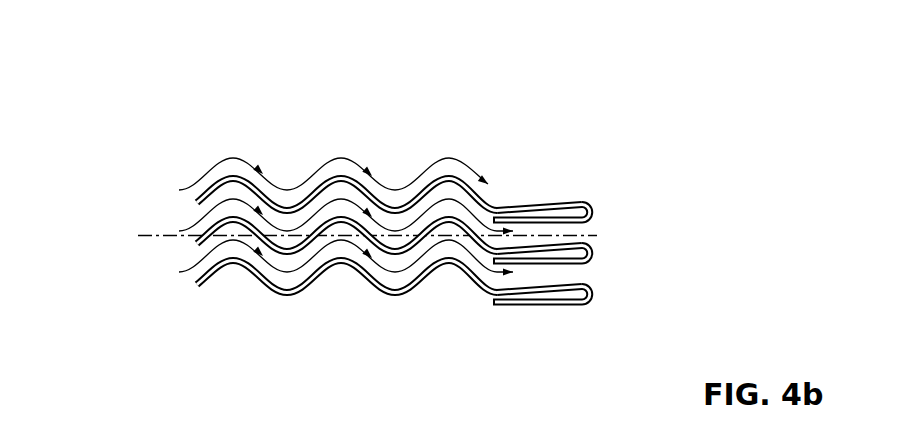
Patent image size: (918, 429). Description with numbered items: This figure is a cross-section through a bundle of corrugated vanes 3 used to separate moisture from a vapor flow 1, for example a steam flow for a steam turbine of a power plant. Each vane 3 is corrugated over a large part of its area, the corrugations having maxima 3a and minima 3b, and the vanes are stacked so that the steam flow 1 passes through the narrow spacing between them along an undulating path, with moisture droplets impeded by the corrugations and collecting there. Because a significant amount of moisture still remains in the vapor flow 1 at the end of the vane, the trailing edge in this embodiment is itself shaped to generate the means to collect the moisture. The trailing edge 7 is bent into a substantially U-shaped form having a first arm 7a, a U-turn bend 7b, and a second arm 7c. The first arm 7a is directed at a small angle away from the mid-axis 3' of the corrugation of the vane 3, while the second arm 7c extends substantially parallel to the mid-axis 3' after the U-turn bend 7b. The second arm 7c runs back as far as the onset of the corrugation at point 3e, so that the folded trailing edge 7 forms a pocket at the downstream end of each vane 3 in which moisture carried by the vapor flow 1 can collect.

The vapor flow 1 is at (347, 198).
The vane 3 is at (352, 233).
The mid-axis of the corrugation 3' is at (365, 322).
The maximum of the corrugation 3a is at (342, 264).
The minimum of the corrugation 3b is at (395, 297).
The onset point of the corrugation 3e is at (505, 206).
The U-shaped trailing edge 7 is at (603, 233).
The first arm 7a is at (547, 203).
The U-turn bend 7b is at (595, 254).
The second arm 7c is at (548, 224).